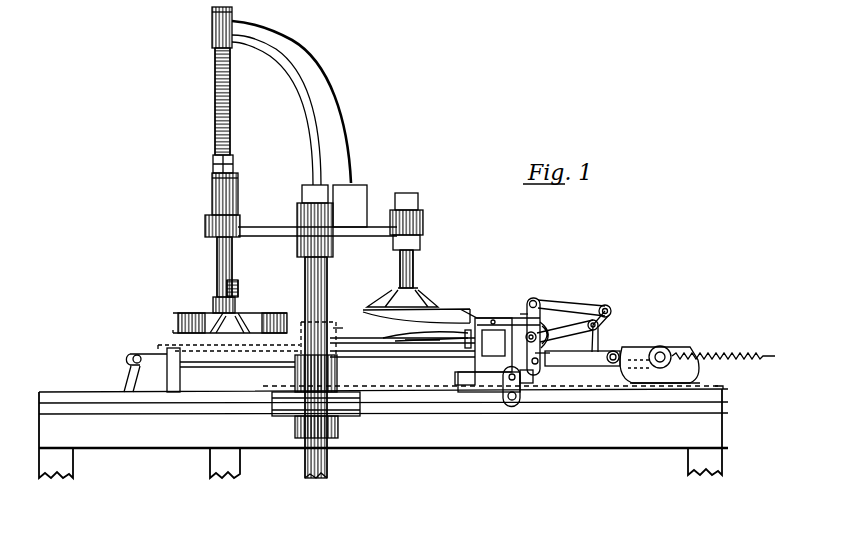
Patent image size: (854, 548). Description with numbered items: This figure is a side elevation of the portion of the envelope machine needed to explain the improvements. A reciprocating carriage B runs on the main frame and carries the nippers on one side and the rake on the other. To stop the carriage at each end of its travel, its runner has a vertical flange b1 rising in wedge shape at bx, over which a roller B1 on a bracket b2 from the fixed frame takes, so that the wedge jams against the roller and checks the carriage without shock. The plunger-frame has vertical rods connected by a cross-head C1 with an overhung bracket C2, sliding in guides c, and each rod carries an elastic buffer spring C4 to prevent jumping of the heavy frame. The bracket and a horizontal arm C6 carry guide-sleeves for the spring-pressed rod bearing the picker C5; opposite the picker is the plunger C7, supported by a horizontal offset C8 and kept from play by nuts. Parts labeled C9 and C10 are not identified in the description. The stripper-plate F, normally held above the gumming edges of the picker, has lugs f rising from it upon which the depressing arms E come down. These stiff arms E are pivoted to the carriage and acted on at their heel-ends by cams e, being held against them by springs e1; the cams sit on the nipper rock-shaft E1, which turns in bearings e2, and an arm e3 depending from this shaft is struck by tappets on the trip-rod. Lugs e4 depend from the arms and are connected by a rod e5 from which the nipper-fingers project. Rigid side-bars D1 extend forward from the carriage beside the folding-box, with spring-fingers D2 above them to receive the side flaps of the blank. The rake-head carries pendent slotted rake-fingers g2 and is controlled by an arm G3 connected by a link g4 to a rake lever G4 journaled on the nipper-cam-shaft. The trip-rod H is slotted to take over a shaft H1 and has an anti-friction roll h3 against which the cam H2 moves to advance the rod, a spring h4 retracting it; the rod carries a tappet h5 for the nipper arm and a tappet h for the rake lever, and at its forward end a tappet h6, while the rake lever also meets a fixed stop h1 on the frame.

The cross-head C1 is at (307, 265).
The guides c is at (293, 418).
The bracket C2 is at (332, 128).
The elastic buffer spring C4 is at (215, 112).
The picker C5 is at (212, 33).
The horizontal arm C6 is at (373, 214).
The plunger C7 is at (418, 305).
The horizontal offset C8 is at (419, 207).
The sleeve on cross bar C9 is at (218, 193).
The clamp block C10 is at (297, 190).
The lugs f is at (238, 307).
The stripper-plate F is at (214, 334).
The trip-rod H is at (272, 358).
The fixed stop h1 is at (125, 373).
The tappet h6 is at (138, 355).
The side-bars D1 is at (378, 347).
The spring-fingers D2 is at (346, 330).
The wedge bx is at (457, 374).
The vertical flange b1 is at (608, 389).
The depressing arms E is at (456, 310).
The lugs e4 is at (440, 329).
The rod e5 is at (467, 342).
The bearings e2 is at (433, 342).
The reciprocating carriage B is at (489, 355).
The roller B1 is at (507, 373).
The bracket b2 is at (517, 402).
The springs e1 is at (520, 314).
The cams e is at (536, 333).
The nipper rock-shaft E1 is at (545, 337).
The rake lever G4 is at (537, 301).
The link g4 is at (595, 297).
The rake-fingers g2 is at (567, 338).
The arm G3 is at (594, 354).
The arm e3 is at (537, 354).
The tappet h5 is at (534, 375).
The tappet h is at (643, 346).
The anti-friction roll h3 is at (614, 350).
The shaft H1 is at (668, 347).
The spring h4 is at (716, 354).
The cam H2 is at (662, 380).